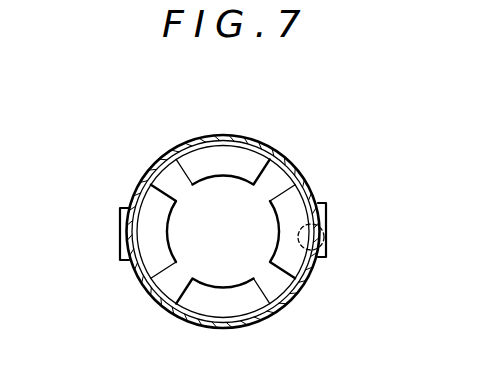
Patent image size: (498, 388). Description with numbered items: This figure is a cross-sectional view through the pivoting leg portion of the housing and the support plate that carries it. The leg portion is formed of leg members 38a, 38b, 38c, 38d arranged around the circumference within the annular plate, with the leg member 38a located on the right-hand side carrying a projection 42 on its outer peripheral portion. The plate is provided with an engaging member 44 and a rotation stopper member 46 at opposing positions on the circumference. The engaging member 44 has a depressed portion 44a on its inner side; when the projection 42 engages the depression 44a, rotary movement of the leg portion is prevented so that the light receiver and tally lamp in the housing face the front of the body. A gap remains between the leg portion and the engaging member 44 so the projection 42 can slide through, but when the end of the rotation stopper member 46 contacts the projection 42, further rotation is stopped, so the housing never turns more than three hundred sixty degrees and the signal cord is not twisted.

The leg member 38a is at (290, 203).
The pole piece 38b is at (205, 308).
The pole piece 38c is at (152, 263).
The pole piece 38d is at (245, 155).
The projection 42 is at (312, 250).
The engaging member 44 is at (327, 210).
The depressed portion 44a is at (326, 246).
The rotation stopper member 46 is at (119, 231).